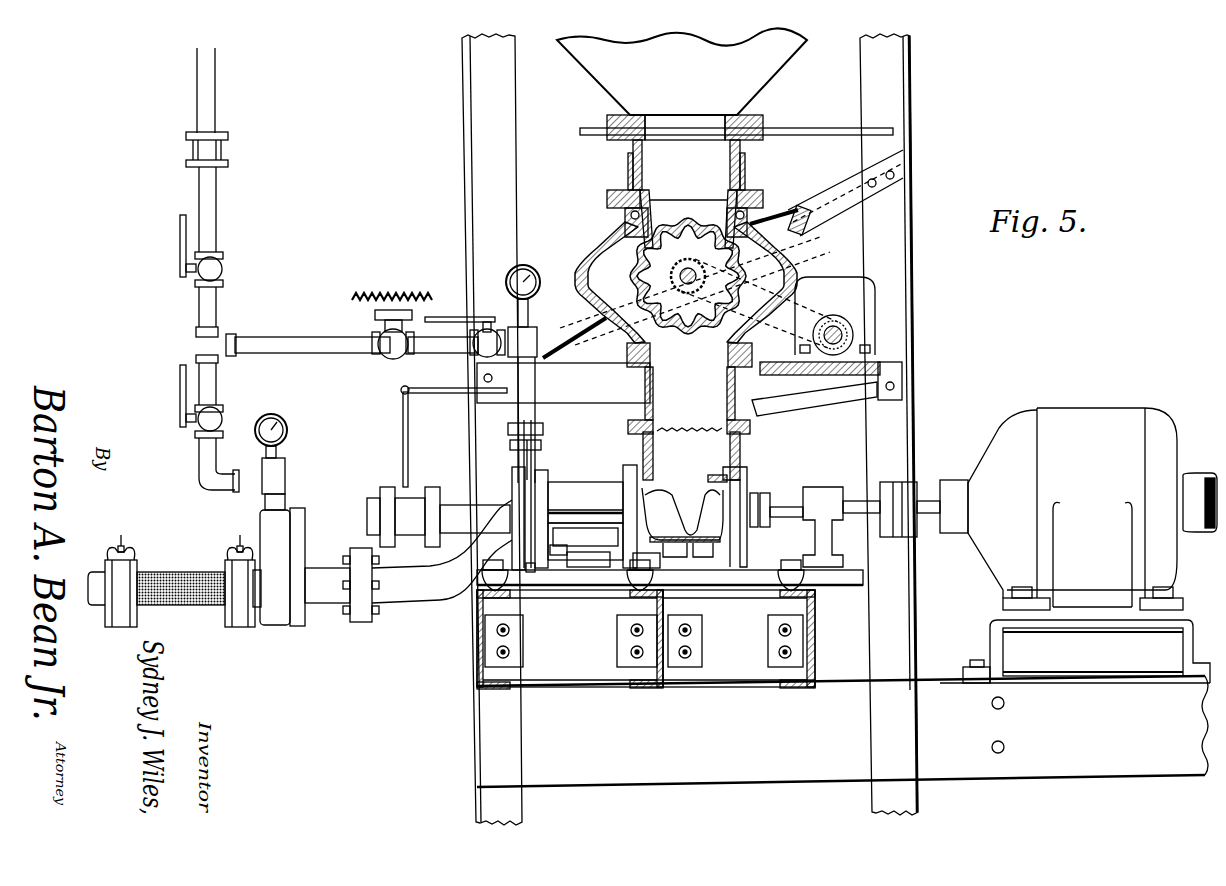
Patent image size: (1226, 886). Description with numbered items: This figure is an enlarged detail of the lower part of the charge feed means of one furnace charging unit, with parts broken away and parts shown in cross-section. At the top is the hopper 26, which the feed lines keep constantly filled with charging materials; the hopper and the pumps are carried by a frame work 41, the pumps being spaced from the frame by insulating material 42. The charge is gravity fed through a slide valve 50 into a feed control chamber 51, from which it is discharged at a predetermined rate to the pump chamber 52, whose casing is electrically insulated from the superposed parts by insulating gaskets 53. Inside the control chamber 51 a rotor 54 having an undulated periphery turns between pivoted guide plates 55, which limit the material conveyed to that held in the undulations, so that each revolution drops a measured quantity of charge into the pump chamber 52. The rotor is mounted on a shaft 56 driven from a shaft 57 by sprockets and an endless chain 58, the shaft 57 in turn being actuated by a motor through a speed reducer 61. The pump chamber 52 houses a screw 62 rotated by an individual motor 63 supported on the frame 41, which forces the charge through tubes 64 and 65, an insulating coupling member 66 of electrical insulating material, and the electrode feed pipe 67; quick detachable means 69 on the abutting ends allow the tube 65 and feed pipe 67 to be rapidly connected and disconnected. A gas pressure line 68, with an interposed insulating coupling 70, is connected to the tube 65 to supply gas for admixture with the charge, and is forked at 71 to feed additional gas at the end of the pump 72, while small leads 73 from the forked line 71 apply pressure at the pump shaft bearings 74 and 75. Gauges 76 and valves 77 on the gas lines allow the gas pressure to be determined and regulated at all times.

The hopper portion 26 is at (780, 79).
The frame work 41 is at (467, 148).
The insulating material 42 is at (655, 600).
The slide valve 50 is at (796, 136).
The feed control chamber 51 is at (630, 197).
The pump chamber 52 is at (686, 345).
The insulating gasket 53 is at (695, 430).
The rotor 54 is at (688, 262).
The pivoted guide plate 55 is at (630, 236).
The shaft 56 is at (688, 285).
The shaft 57 is at (853, 335).
The endless chain 58 is at (787, 348).
The speed reducer 61 is at (835, 316).
The screw 62 is at (673, 495).
The motor 63 is at (1083, 410).
The tube 64 is at (398, 593).
The tube 65 is at (330, 590).
The insulating coupling member 66 is at (180, 607).
The electrode feed pipe 67 is at (100, 600).
The gas pressure line 68 is at (208, 100).
The quick detachable means 69 is at (180, 572).
The insulating coupling 70 is at (216, 150).
The forked line 71 is at (292, 338).
The pump 72 is at (538, 470).
The small lead 73 is at (408, 460).
The pump shaft bearing 74 is at (408, 490).
The pump shaft bearing 75 is at (760, 496).
The gauge 76 is at (285, 426).
The valve 77 is at (214, 268).